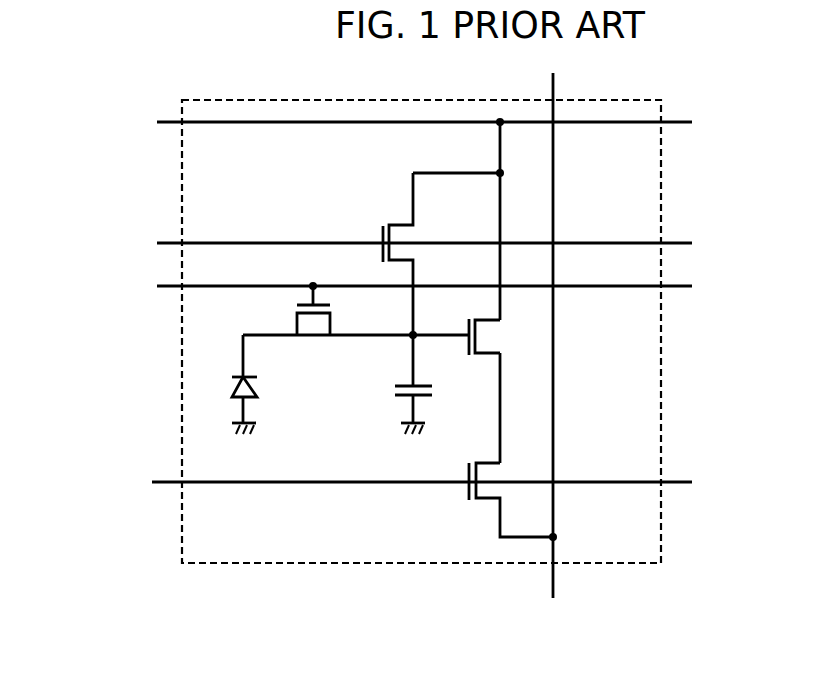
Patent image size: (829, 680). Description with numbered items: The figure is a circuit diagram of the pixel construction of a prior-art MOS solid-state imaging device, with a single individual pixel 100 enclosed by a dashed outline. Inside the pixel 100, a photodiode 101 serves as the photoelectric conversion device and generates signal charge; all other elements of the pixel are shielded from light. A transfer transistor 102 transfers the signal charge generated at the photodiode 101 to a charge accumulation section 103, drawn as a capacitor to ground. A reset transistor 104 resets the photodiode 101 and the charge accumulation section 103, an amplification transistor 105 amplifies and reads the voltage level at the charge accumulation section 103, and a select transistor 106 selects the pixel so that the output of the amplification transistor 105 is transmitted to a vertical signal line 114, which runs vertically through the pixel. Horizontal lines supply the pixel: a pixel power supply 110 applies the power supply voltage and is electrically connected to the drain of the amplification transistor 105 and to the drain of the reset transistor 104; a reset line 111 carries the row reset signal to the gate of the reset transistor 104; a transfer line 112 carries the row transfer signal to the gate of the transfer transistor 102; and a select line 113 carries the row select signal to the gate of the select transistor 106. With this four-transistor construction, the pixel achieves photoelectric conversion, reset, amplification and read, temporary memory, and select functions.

The individual pixel 100 is at (210, 565).
The photodiode 101 is at (250, 385).
The transfer transistor 102 is at (316, 333).
The charge accumulation section 103 is at (433, 391).
The reset transistor 104 is at (380, 228).
The amplification transistor 105 is at (497, 338).
The select transistor 106 is at (464, 490).
The pixel power supply 110 is at (157, 122).
The reset line 111 is at (157, 243).
The transfer line 112 is at (157, 286).
The select line 113 is at (155, 482).
The vertical signal line 114 is at (555, 207).